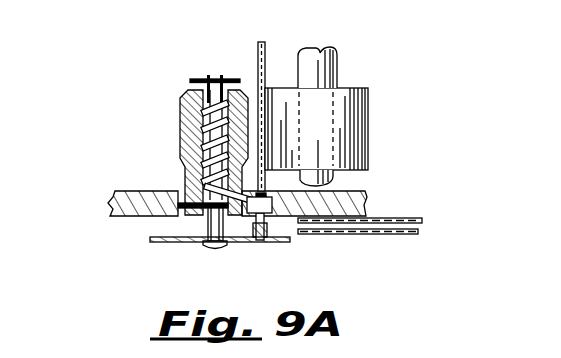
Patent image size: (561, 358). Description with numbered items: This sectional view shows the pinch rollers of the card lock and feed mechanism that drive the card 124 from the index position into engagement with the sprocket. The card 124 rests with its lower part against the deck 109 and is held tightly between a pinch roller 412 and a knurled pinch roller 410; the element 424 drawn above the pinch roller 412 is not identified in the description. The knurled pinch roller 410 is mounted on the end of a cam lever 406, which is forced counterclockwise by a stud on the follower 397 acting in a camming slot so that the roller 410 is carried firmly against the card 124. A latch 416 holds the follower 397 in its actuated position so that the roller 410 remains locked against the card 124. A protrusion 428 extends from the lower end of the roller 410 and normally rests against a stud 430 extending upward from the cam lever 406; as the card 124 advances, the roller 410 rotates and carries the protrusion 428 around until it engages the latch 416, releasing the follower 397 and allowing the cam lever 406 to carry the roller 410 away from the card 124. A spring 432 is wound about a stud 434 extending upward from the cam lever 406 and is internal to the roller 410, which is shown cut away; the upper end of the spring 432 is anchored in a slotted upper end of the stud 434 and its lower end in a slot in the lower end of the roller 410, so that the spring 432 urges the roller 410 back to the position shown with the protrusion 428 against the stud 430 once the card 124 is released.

The deck 109 is at (115, 191).
The knurled pinch roller 410 is at (180, 100).
The spring 432 is at (183, 130).
The stud 434 is at (200, 225).
The cam lever 406 is at (170, 241).
The protrusion 428 is at (247, 240).
The stud 430 is at (268, 223).
The fanfold card 124 is at (262, 43).
The pinch roller 412 is at (368, 105).
The piston shaft 424 is at (337, 57).
The follower 397 is at (410, 220).
The latch 416 is at (406, 235).